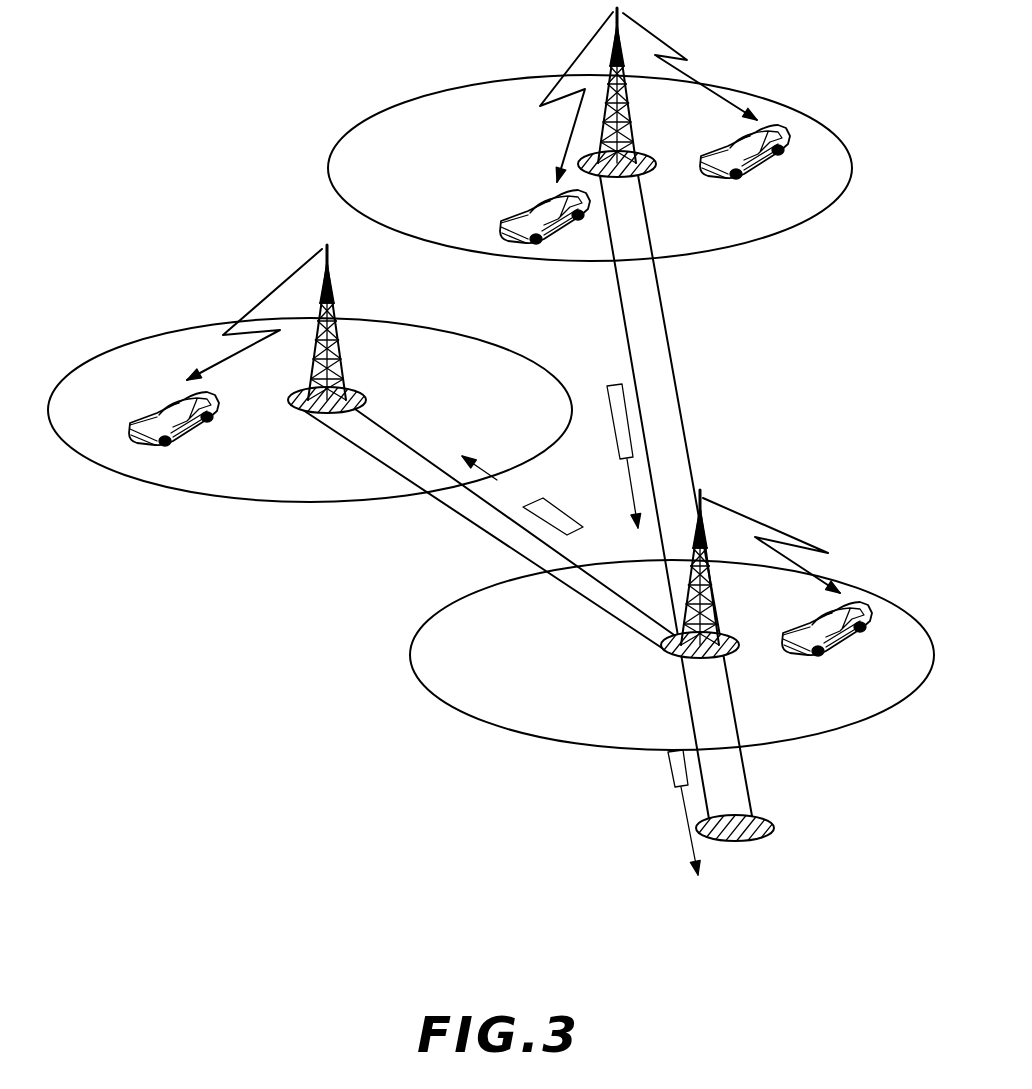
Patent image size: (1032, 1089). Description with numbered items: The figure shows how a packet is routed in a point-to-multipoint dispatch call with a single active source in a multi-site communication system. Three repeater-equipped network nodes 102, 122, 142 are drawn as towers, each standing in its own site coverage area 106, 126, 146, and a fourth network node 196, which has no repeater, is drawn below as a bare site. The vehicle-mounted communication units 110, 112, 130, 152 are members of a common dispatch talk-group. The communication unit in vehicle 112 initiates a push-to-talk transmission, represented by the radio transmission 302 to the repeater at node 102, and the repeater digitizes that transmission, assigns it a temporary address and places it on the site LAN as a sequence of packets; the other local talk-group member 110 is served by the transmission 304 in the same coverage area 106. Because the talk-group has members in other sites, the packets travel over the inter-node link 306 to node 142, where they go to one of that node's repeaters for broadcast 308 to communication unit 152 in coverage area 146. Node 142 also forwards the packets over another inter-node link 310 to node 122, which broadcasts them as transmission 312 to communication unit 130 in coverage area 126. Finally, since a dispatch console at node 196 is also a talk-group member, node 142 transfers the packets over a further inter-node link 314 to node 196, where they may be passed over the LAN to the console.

The network node 102 is at (645, 158).
The coverage area 106 is at (763, 100).
The vehicle mounted communication unit 110 is at (555, 188).
The vehicle mounted communication unit 112 is at (757, 119).
The network node 122 is at (300, 395).
The coverage area 126 is at (382, 320).
The vehicle mounted communication unit 130 is at (185, 392).
The network node 142 is at (736, 650).
The coverage area 146 is at (430, 612).
The vehicle mounted communication unit 152 is at (843, 600).
The network node 196 is at (766, 830).
The broadcast 302 is at (660, 46).
The broadcast 304 is at (590, 47).
The inter-node link 306 is at (608, 385).
The broadcast 308 is at (790, 539).
The inter-node link 310 is at (547, 511).
The broadcast 312 is at (290, 272).
The inter-node link 314 is at (672, 775).